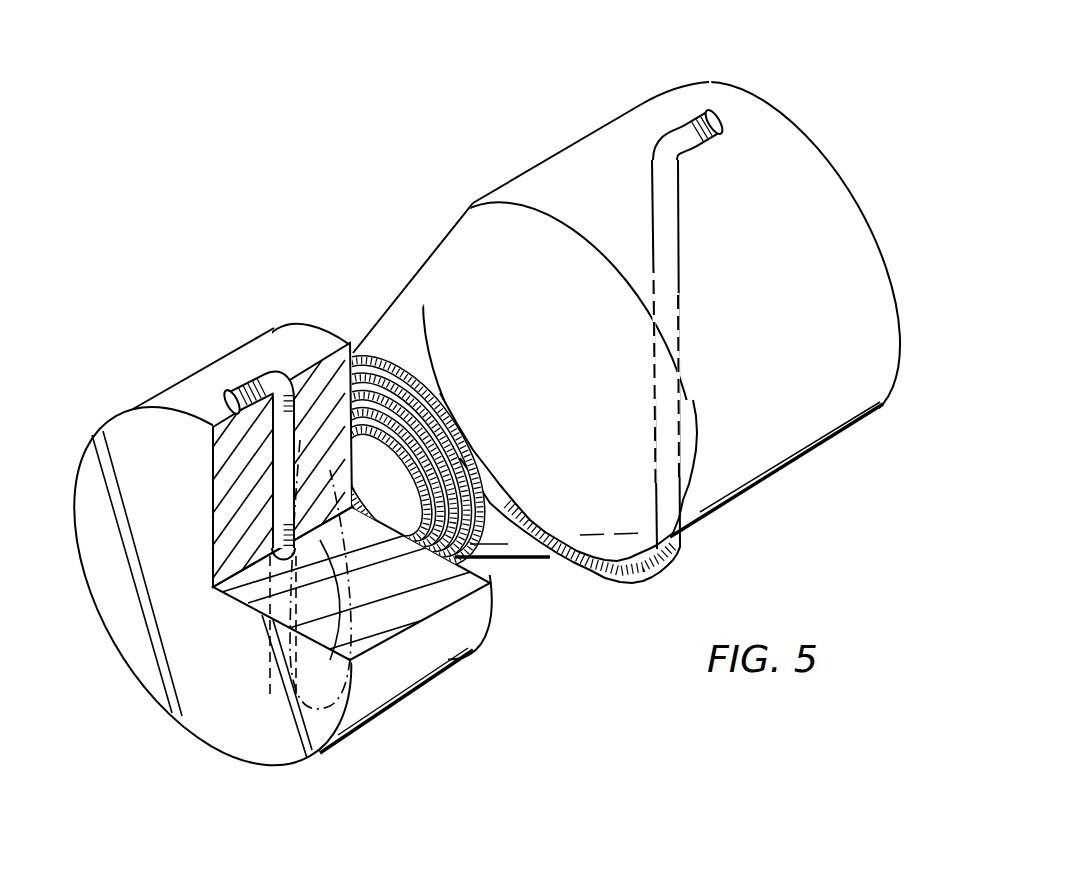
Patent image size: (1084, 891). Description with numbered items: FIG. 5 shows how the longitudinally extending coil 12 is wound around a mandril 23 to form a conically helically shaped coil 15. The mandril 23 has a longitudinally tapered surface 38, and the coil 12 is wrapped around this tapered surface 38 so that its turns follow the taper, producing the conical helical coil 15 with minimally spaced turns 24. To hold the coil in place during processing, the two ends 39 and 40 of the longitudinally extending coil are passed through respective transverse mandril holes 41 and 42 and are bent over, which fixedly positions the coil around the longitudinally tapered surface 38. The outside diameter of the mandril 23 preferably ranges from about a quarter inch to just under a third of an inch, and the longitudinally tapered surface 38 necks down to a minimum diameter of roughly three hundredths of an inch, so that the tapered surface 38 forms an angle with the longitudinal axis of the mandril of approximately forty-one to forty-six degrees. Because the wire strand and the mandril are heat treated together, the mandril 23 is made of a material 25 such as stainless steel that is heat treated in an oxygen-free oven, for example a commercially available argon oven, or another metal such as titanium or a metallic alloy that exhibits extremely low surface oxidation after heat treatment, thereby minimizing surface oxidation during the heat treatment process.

The longitudinally extending coil 12 is at (376, 344).
The conically helically shaped coil 15 is at (402, 397).
The mandril 23 is at (558, 170).
The minimally spaced turns 24 is at (497, 560).
The material 25 is at (373, 637).
The longitudinally tapered surface 38 is at (438, 267).
The end 39 is at (260, 380).
The end 40 is at (696, 115).
The transverse mandril hole 41 is at (302, 348).
The transverse mandril hole 42 is at (648, 158).